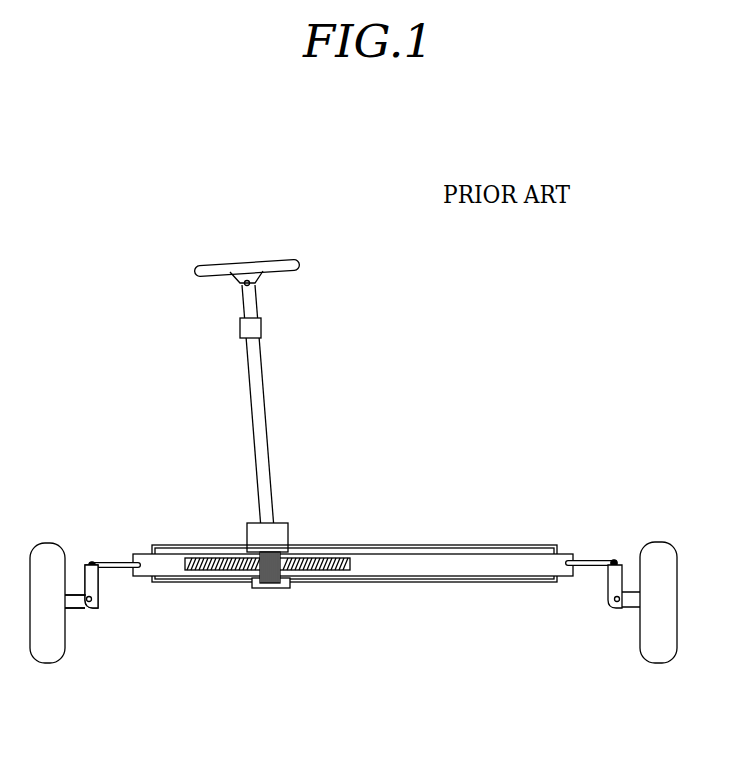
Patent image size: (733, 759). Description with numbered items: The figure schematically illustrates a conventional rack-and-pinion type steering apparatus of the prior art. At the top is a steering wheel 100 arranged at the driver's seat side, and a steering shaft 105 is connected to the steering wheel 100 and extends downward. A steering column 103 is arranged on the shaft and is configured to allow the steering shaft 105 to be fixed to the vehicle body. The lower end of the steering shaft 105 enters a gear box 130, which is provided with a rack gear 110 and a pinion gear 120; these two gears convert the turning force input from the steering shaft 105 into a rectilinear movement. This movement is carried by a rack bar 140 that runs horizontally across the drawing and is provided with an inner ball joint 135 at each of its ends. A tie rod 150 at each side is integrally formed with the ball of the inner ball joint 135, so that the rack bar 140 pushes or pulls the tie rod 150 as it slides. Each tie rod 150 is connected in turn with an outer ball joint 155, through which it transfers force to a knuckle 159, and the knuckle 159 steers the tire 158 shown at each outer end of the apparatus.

The steering wheel 100 is at (292, 259).
The steering column 103 is at (262, 327).
The steering shaft 105 is at (260, 405).
The gear box 130 is at (289, 536).
The rack bar 140 is at (473, 570).
The inner ball joint 135 is at (145, 555).
The rack gear 110 is at (341, 570).
The pinion gear 120 is at (253, 588).
The tie rod 150 is at (120, 564).
The outer ball joint 155 is at (92, 561).
The knuckle 159 is at (99, 580).
The tire 158 is at (45, 543).